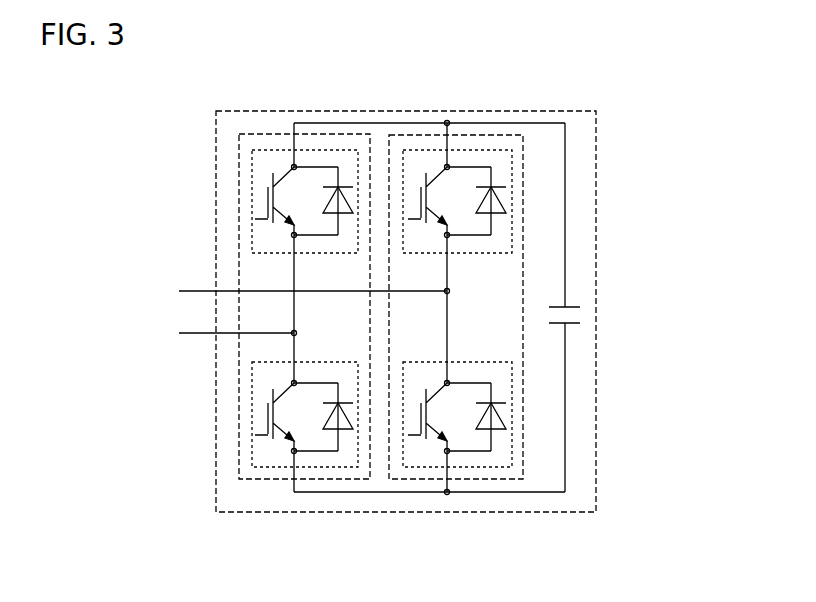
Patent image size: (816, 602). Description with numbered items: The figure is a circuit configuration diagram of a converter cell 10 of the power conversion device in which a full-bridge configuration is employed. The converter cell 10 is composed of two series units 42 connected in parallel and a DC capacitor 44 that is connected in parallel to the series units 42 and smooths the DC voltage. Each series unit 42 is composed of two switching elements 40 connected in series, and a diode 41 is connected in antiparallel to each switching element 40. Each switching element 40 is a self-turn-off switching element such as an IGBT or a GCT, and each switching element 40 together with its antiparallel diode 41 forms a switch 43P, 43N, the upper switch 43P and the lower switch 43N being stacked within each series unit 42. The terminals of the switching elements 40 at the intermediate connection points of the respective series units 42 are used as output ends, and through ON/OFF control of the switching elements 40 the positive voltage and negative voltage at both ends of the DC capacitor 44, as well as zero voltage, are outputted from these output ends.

The converter cell 10 is at (597, 137).
The switching element 40 is at (260, 178).
The diode 41 is at (345, 180).
The series unit 42 is at (242, 135).
The switch 43P is at (252, 210).
The switch 43N is at (252, 405).
The DC capacitor 44 is at (572, 298).